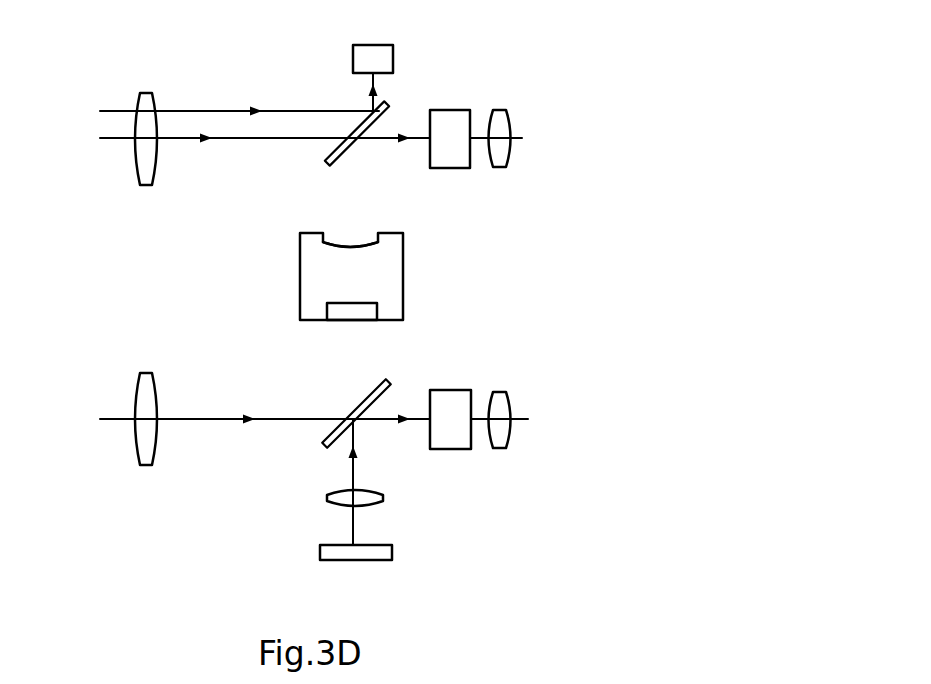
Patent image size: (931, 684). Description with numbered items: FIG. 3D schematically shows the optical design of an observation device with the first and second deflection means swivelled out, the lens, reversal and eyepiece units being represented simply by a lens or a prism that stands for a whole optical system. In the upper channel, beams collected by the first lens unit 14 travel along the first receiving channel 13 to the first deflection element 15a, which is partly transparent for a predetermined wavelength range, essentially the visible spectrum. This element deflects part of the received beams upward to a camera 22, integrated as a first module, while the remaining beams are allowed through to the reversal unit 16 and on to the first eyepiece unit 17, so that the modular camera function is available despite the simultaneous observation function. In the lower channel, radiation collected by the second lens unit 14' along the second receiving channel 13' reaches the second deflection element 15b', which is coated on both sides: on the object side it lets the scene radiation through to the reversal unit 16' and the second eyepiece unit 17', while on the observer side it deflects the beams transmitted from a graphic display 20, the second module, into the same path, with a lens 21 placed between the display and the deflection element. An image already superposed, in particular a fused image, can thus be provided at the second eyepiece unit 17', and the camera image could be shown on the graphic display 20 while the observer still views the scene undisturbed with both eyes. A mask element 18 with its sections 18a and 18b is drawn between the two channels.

The first receiving channel 13 is at (190, 210).
The first lens unit 14 is at (95, 179).
The first deflection element 15a is at (327, 163).
The reversal unit 16 is at (456, 84).
The first eyepiece unit 17 is at (539, 109).
The mask element 18 is at (403, 277).
The mask lower aperture section 18a is at (362, 318).
The mask upper curved section 18b is at (363, 252).
The camera 22 is at (357, 60).
The second receiving channel 13' is at (174, 501).
The second lens unit 14' is at (93, 467).
The second deflection element 15b' is at (307, 391).
The reversal unit 16' is at (487, 466).
The second eyepiece unit 17' is at (551, 434).
The graphic display 20 is at (392, 553).
The condenser lens 21 is at (330, 502).